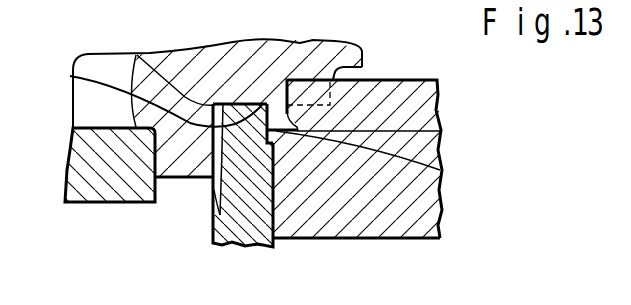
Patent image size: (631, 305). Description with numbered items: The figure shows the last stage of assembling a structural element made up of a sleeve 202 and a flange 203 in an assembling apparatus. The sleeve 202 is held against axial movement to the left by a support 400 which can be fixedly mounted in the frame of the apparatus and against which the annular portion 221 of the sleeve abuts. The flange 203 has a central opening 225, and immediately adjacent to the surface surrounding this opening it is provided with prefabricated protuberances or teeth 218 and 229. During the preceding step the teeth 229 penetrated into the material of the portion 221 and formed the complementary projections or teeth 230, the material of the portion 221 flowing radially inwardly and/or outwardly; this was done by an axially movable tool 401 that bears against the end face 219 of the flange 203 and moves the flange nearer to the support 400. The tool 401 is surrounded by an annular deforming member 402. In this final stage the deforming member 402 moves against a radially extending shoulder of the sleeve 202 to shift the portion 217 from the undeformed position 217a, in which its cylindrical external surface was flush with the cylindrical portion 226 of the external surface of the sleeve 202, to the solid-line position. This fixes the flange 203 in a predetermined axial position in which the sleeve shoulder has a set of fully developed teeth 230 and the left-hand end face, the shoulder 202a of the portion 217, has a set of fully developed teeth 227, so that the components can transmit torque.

The sleeve 202 is at (177, 75).
The shoulder 202a is at (72, 77).
The flange 203 is at (250, 220).
The portion 217 is at (310, 95).
The position of the portion before upsetting 217a is at (335, 88).
The teeth 218 is at (440, 170).
The end face 219 is at (273, 195).
The annular portion 221 is at (180, 158).
The central opening 225 is at (252, 104).
The cylindrical portion 226 is at (136, 55).
The teeth 227 is at (273, 113).
The teeth 229 is at (212, 225).
The teeth 230 is at (218, 173).
The support 400 is at (83, 185).
The tool 401 is at (388, 217).
The deforming member 402 is at (395, 102).